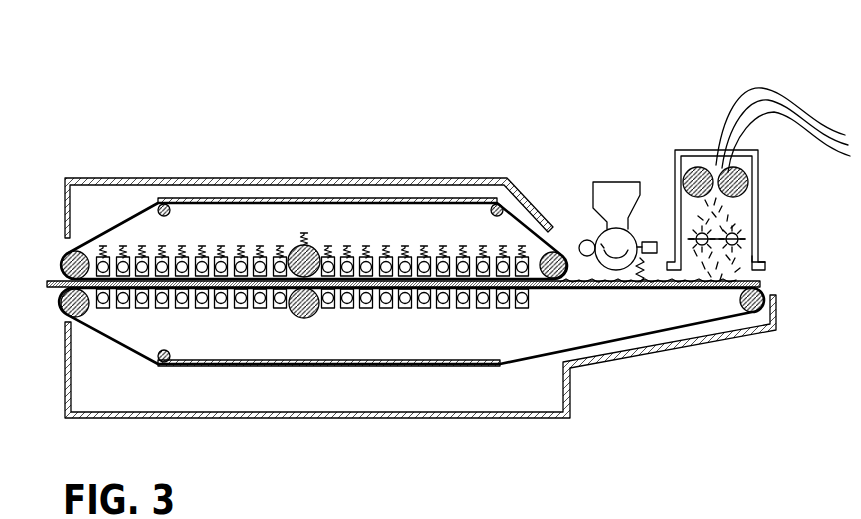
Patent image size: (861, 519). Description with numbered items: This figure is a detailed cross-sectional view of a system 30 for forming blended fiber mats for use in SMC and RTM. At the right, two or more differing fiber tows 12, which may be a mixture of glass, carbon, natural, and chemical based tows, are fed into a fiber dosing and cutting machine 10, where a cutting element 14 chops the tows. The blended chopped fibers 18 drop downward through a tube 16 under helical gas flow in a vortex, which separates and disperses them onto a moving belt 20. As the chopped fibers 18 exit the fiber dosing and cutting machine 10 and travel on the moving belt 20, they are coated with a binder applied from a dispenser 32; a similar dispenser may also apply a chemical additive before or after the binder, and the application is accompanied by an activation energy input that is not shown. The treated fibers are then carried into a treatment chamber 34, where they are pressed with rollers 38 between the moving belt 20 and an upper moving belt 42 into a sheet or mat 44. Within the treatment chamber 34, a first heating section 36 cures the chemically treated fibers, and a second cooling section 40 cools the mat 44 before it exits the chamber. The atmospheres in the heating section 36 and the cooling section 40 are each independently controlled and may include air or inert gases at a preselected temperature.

The system 30 is at (114, 84).
The treatment chamber 34 is at (118, 178).
The upper moving belt 42 is at (101, 231).
The moving belt 20 is at (578, 281).
The sheet or mat 44 is at (49, 289).
The second cooling section 40 is at (287, 246).
The first heating section 36 is at (531, 248).
The rollers 38 is at (309, 245).
The dispenser 32 is at (617, 181).
The fiber dosing and cutting machine 10 is at (687, 150).
The fiber tows 12 is at (822, 136).
The cutting element 14 is at (745, 239).
The tube 16 is at (764, 263).
The chopped fibers 18 is at (738, 268).